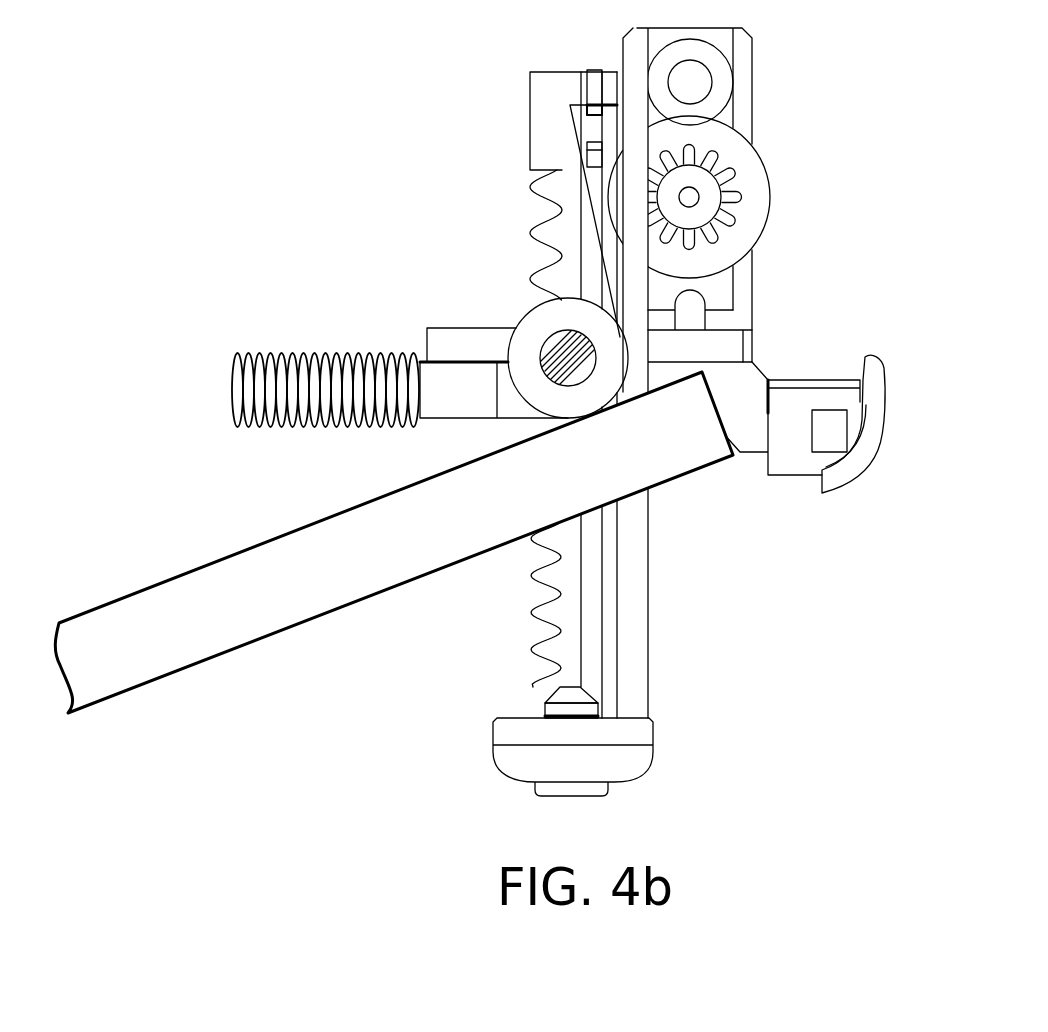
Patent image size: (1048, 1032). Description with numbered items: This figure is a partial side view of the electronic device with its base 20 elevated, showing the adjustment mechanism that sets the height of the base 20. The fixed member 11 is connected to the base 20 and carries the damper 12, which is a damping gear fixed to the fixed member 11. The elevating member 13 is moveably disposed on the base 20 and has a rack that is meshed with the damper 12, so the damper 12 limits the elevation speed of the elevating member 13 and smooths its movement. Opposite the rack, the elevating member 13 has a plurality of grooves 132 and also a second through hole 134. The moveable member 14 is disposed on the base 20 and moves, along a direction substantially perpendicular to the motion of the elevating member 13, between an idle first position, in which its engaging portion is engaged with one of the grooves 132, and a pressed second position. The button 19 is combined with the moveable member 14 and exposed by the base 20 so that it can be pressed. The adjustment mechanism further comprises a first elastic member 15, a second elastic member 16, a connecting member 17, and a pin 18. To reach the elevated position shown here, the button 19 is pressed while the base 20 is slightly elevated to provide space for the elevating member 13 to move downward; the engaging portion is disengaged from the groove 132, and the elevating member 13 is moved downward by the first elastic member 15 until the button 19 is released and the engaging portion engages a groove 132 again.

The fixed member 11 is at (753, 63).
The damper 12 is at (740, 205).
The elevating member 13 is at (648, 257).
The grooves 132 is at (547, 667).
The second through hole 134 is at (583, 145).
The moveable member 14 is at (758, 367).
The first elastic member 15 is at (522, 317).
The second elastic member 16 is at (283, 355).
The connecting member 17 is at (593, 90).
The pin 18 is at (657, 97).
The button 19 is at (885, 408).
The base 20 is at (128, 627).